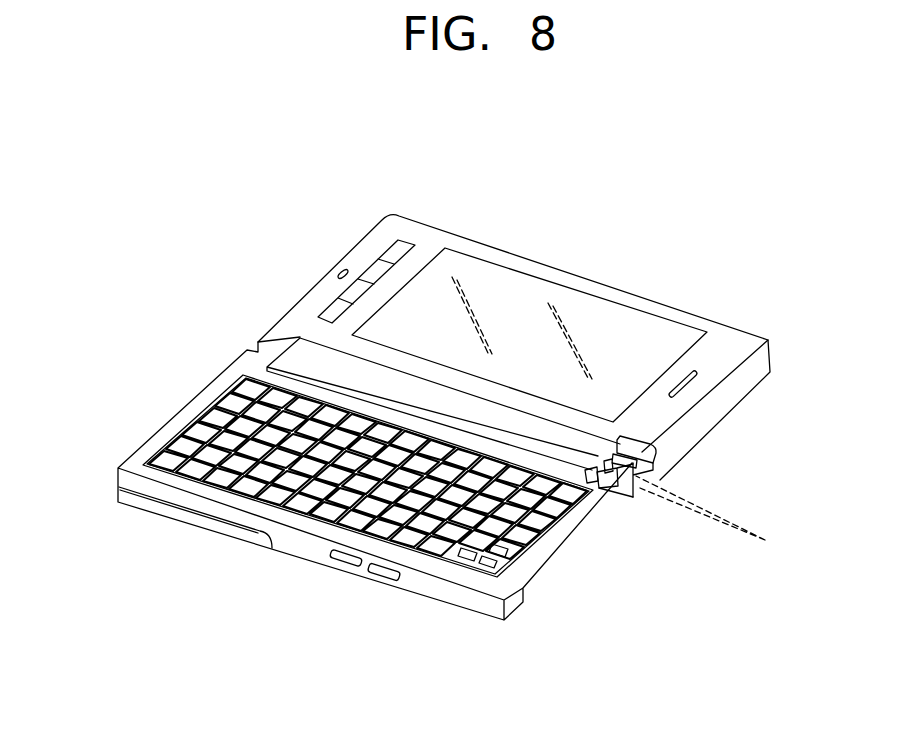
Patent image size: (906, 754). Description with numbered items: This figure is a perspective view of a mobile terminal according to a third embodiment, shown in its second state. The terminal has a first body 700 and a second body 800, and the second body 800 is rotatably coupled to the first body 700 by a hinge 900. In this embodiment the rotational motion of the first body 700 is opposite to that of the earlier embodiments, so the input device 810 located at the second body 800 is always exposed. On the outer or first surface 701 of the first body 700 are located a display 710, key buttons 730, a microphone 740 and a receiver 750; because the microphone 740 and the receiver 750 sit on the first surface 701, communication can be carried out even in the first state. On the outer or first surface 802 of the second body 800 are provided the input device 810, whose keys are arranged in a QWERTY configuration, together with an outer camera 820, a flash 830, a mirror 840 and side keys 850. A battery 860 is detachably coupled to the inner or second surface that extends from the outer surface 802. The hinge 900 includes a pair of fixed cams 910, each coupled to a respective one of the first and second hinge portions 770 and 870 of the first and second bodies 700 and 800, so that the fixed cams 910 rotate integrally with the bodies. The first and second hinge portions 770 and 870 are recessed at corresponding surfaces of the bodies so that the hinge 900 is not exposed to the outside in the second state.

The first body 700 is at (517, 302).
The first surface 701 is at (383, 232).
The display 710 is at (523, 283).
The key buttons 730 is at (402, 243).
The microphone 740 is at (340, 272).
The receiver 750 is at (697, 388).
The first hinge portion 770 is at (627, 487).
The second body 800 is at (355, 497).
The first surface 802 is at (133, 463).
The input device 810 is at (580, 505).
The outer camera 820 is at (508, 563).
The flash 830 is at (495, 560).
The mirror 840 is at (468, 558).
The side keys 850 is at (382, 577).
The battery 860 is at (203, 522).
The second hinge portion 870 is at (650, 453).
The hinge 900 is at (298, 353).
The fixed cams 910 is at (719, 517).